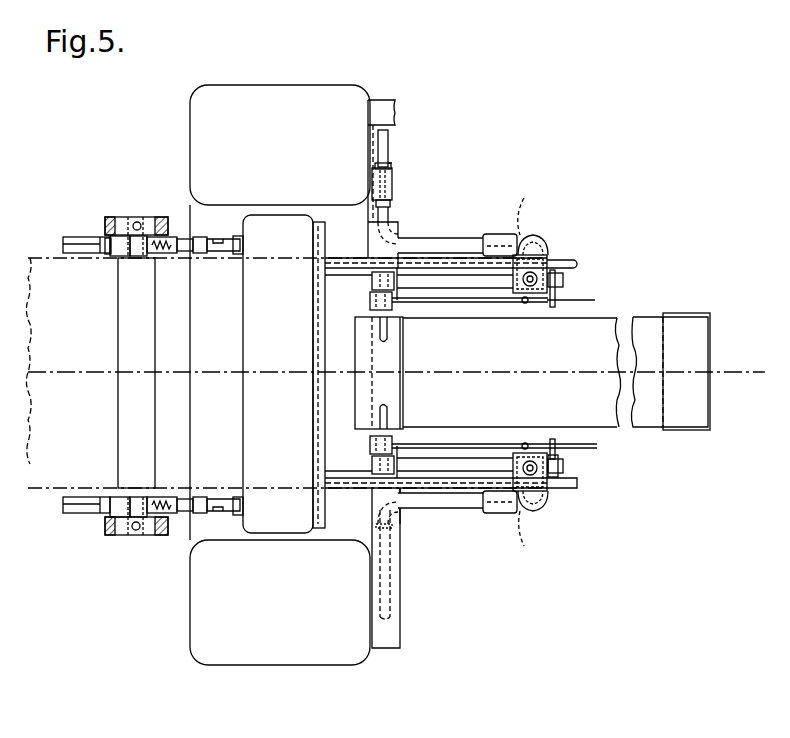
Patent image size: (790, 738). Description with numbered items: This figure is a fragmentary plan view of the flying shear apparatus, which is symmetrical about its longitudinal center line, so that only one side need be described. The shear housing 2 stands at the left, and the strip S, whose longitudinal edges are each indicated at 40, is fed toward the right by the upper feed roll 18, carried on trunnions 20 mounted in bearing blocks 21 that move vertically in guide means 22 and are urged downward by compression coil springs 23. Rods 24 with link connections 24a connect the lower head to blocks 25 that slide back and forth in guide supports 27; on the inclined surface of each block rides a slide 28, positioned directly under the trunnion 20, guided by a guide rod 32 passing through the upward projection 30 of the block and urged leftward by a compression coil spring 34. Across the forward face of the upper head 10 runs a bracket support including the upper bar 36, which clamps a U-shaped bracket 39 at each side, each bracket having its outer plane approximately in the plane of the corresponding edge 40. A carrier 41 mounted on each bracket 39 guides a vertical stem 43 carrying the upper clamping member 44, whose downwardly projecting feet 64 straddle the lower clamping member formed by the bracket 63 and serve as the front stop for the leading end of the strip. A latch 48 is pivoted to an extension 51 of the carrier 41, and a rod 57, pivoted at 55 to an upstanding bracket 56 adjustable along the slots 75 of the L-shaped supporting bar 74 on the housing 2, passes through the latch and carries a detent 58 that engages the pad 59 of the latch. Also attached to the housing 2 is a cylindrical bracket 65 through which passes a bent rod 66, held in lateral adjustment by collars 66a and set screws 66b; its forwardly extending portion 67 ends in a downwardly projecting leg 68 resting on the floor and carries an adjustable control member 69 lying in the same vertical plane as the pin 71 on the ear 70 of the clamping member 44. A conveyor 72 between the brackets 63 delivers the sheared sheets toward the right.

The shear housing 2 is at (188, 123).
The upper head 10 is at (287, 382).
The upper feed roll 18 is at (120, 305).
The trunnions 20 is at (125, 248).
The bearing blocks 21 is at (157, 219).
The guide means 22 is at (106, 219).
The compression coil springs 23 is at (135, 220).
The rods 24 is at (208, 240).
The link connections 24a is at (242, 250).
The blocks 25 is at (106, 243).
The guide supports 27 is at (68, 244).
The slide 28 is at (112, 245).
The upward projection 30 is at (180, 253).
The guide rod 32 is at (194, 251).
The compression coil spring 34 is at (162, 255).
The upper bar 36 is at (314, 342).
The bracket 39 is at (456, 256).
The longitudinal edge of the strip 40 is at (434, 252).
The carrier 41 is at (510, 280).
The vertical stem 43 is at (532, 294).
The upper clamping member 44 is at (514, 286).
The latch 48 is at (564, 280).
The extension 51 is at (562, 465).
The pivot 55 is at (370, 306).
The upstanding bracket 56 is at (372, 286).
The rod 57 is at (468, 302).
The detent 58 is at (522, 303).
The pad 59 is at (552, 307).
The bracket 63 is at (446, 290).
The feet 64 is at (552, 252).
The cylindrical bracket 65 is at (392, 189).
The bent rod 66 is at (388, 143).
The collars 66a is at (391, 165).
The set screws 66b is at (376, 164).
The forwardly extending portion 67 is at (408, 242).
The downwardly projecting leg 68 is at (544, 255).
The control member 69 is at (508, 234).
The ear 70 is at (525, 236).
The pin 71 is at (528, 371).
The conveyor 72 is at (495, 382).
The supporting bar 74 is at (396, 112).
The elongated slots 75 is at (388, 387).
The strip S is at (78, 409).